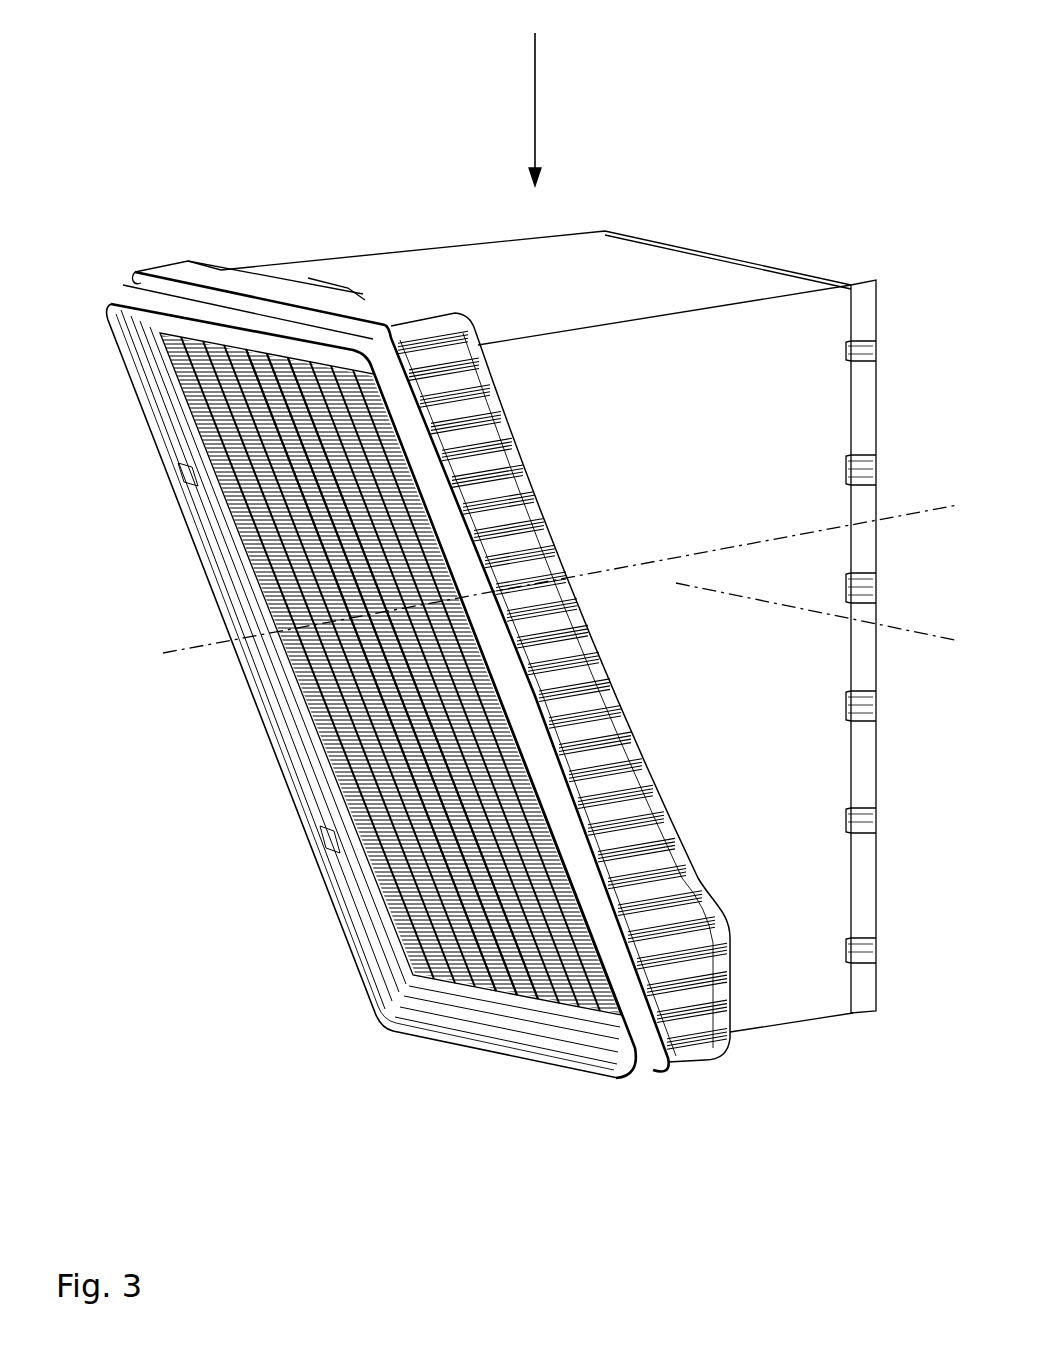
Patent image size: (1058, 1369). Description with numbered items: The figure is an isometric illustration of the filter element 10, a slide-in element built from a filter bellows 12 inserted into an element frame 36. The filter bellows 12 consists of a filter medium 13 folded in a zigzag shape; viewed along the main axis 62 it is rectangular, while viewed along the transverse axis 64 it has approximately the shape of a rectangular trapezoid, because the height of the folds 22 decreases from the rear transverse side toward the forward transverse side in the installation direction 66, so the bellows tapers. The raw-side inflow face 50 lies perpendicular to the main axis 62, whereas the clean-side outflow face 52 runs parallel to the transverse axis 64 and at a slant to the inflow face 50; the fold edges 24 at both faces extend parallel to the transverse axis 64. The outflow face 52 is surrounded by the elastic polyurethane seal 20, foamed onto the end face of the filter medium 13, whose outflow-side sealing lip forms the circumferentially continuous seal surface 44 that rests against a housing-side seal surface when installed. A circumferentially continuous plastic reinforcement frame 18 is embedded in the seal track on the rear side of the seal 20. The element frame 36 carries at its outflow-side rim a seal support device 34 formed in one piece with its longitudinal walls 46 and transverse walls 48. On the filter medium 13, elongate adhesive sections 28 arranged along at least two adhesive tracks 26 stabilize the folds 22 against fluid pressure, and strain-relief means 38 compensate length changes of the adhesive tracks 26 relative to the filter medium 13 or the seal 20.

The filter element 10 is at (704, 100).
The filter bellows 12 is at (180, 380).
The filter medium 13 is at (195, 432).
The reinforcement frame 18 is at (377, 313).
The seal 20 is at (103, 296).
The folds 22 is at (232, 550).
The fold edges 24 is at (212, 503).
The adhesive tracks 26 is at (312, 722).
The adhesive sections 28 is at (392, 674).
The seal support device 34 is at (213, 262).
The element frame 36 is at (450, 255).
The strain-relief means 38 is at (285, 630).
The seal surface 44 is at (305, 822).
The longitudinal walls 46 is at (800, 333).
The transverse walls 48 is at (625, 265).
The inflow face 50 is at (882, 555).
The outflow face 52 is at (233, 715).
The main axis 62 is at (897, 500).
The transverse axis 64 is at (920, 632).
The installation direction 66 is at (527, 73).